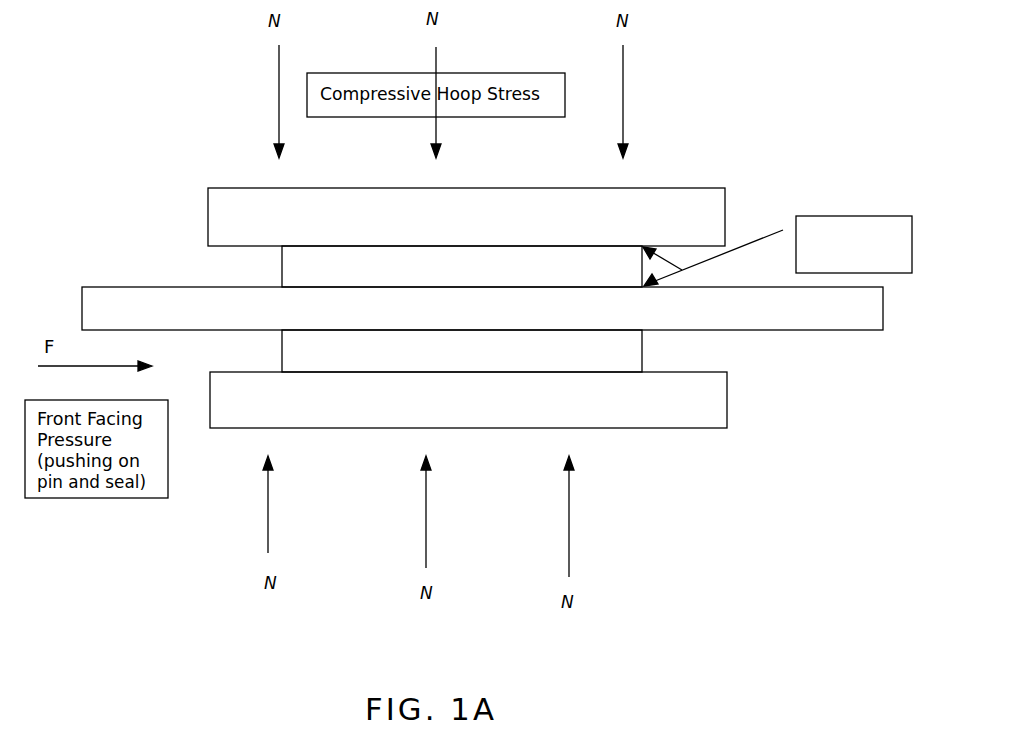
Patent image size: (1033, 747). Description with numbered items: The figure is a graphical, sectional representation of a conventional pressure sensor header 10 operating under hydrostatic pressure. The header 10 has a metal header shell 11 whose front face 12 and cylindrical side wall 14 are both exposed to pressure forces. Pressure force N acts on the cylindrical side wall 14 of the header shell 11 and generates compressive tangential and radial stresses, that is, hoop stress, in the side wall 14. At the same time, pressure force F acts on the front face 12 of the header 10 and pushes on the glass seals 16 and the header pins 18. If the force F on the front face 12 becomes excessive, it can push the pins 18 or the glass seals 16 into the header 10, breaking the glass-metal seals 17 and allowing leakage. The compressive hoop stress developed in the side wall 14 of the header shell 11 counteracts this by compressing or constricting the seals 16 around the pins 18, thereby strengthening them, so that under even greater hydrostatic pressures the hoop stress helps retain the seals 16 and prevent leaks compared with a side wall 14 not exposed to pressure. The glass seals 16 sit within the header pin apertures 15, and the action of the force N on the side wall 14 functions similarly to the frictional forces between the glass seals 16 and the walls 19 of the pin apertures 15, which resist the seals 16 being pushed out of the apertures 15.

The pressure sensor header 10 is at (660, 140).
The metal header shell 11 is at (681, 188).
The front face 12 is at (62, 280).
The cylindrical side wall 14 is at (235, 193).
The header pin apertures 15 is at (677, 349).
The glass seals 16 is at (285, 346).
The glass-metal seals 17 is at (823, 215).
The header pins 18 is at (823, 313).
The walls of the header pin apertures 19 is at (675, 370).